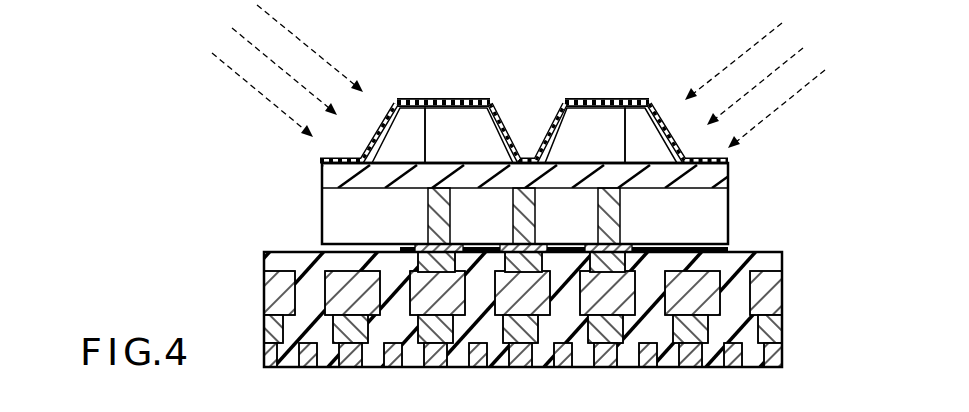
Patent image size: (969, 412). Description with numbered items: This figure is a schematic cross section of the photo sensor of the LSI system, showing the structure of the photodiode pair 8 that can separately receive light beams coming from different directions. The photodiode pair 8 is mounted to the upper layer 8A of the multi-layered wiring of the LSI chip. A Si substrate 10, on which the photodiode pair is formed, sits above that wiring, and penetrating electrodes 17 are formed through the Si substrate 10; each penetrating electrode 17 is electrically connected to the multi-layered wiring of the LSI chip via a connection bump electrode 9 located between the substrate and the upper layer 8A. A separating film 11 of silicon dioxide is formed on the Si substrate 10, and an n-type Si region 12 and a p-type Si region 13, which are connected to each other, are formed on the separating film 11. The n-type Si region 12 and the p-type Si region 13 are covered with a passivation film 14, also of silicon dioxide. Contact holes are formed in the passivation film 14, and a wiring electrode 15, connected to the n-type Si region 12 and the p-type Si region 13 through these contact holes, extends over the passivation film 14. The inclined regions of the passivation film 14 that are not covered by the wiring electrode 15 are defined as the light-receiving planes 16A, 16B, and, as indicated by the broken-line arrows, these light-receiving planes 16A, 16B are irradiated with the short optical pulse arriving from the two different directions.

The photodiode pair 8 is at (525, 74).
The upper layer of the multi-layered wiring 8A is at (792, 254).
The connection bump electrode 9 is at (397, 247).
The Si substrate 10 is at (713, 236).
The separating film 11 is at (720, 181).
The n-type Si region 12 is at (407, 127).
The p-type Si region 13 is at (448, 127).
The passivation film 14 is at (728, 166).
The wiring electrode 15 is at (638, 104).
The light-receiving plane 16A is at (680, 140).
The light-receiving plane 16B is at (372, 141).
The penetrating electrode 17 is at (437, 222).